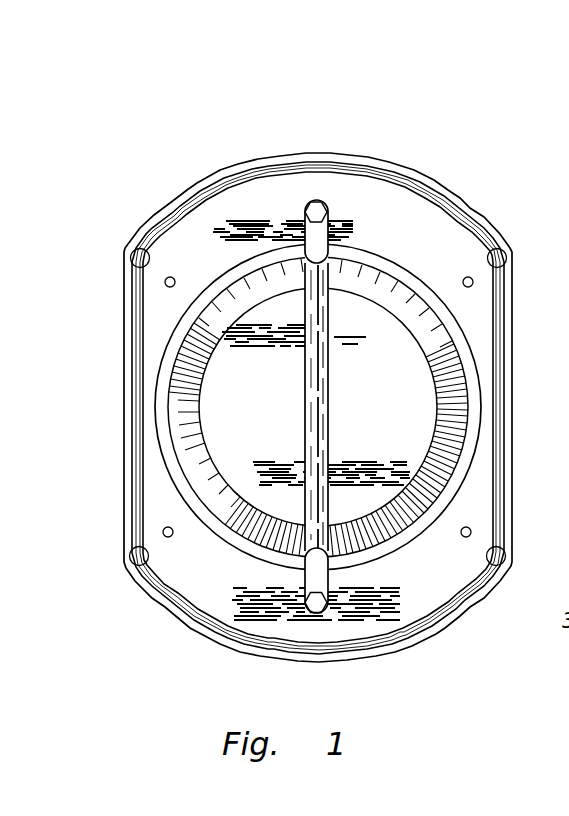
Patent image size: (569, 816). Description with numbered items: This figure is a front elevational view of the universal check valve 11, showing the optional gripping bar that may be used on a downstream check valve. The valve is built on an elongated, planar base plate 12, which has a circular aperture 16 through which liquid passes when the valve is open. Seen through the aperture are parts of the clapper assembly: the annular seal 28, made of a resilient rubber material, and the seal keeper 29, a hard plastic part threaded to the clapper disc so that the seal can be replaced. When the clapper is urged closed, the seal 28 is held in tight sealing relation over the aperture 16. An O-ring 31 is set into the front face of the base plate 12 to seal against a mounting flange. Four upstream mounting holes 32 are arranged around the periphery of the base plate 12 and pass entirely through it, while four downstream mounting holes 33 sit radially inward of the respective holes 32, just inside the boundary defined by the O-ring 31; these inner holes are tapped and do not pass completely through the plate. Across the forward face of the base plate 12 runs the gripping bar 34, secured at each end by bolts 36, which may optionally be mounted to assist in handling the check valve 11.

The universal check valve 11 is at (322, 368).
The base plate 12 is at (322, 395).
The circular aperture 16 is at (345, 558).
The annular seal 28 is at (355, 256).
The seal keeper 29 is at (268, 500).
The O-ring 31 is at (262, 170).
The upstream mounting holes 32 is at (138, 256).
The downstream mounting holes 33 is at (168, 284).
The gripping bar 34 is at (328, 438).
The bolts 36 is at (317, 200).